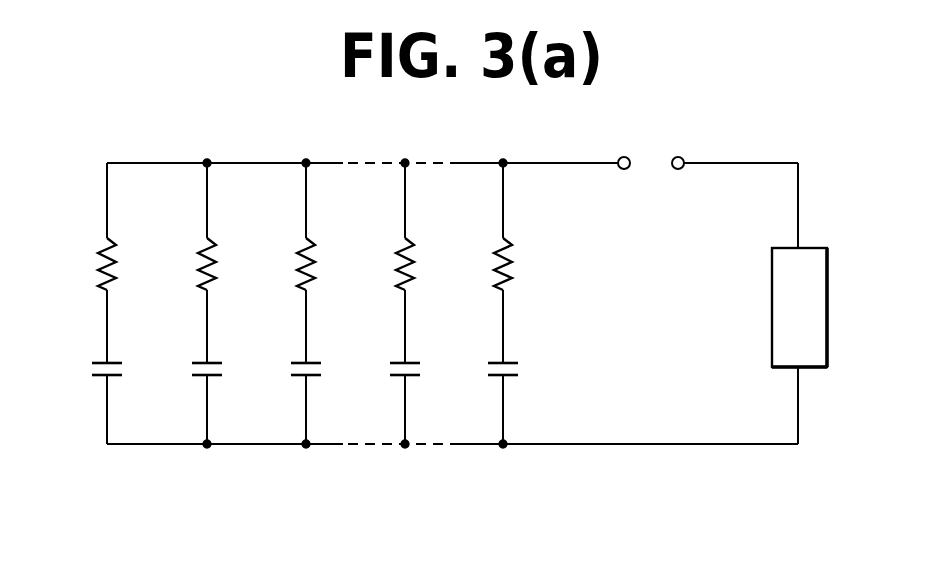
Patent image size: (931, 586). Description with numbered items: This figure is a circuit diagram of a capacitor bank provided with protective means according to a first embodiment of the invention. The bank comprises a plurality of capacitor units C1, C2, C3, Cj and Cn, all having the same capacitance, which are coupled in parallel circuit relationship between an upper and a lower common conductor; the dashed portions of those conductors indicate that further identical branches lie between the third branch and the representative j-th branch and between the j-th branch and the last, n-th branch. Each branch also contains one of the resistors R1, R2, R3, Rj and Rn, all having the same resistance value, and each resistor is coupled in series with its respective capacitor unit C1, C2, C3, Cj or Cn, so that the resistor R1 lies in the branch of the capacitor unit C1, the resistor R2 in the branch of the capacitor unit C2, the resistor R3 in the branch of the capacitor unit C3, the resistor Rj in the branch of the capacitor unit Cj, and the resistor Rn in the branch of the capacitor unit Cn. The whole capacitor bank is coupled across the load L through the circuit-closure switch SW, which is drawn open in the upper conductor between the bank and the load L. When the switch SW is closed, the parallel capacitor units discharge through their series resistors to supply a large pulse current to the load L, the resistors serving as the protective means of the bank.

The resistor R1 is at (86, 226).
The resistor R2 is at (186, 226).
The resistor R3 is at (288, 226).
The resistor Rj is at (423, 226).
The resistor Rn is at (480, 226).
The capacitor unit C1 is at (89, 367).
The capacitor unit C2 is at (187, 367).
The capacitor unit C3 is at (289, 367).
The capacitor unit Cj is at (419, 367).
The capacitor unit Cn is at (490, 367).
The circuit-closure switch SW is at (651, 146).
The load L is at (811, 307).